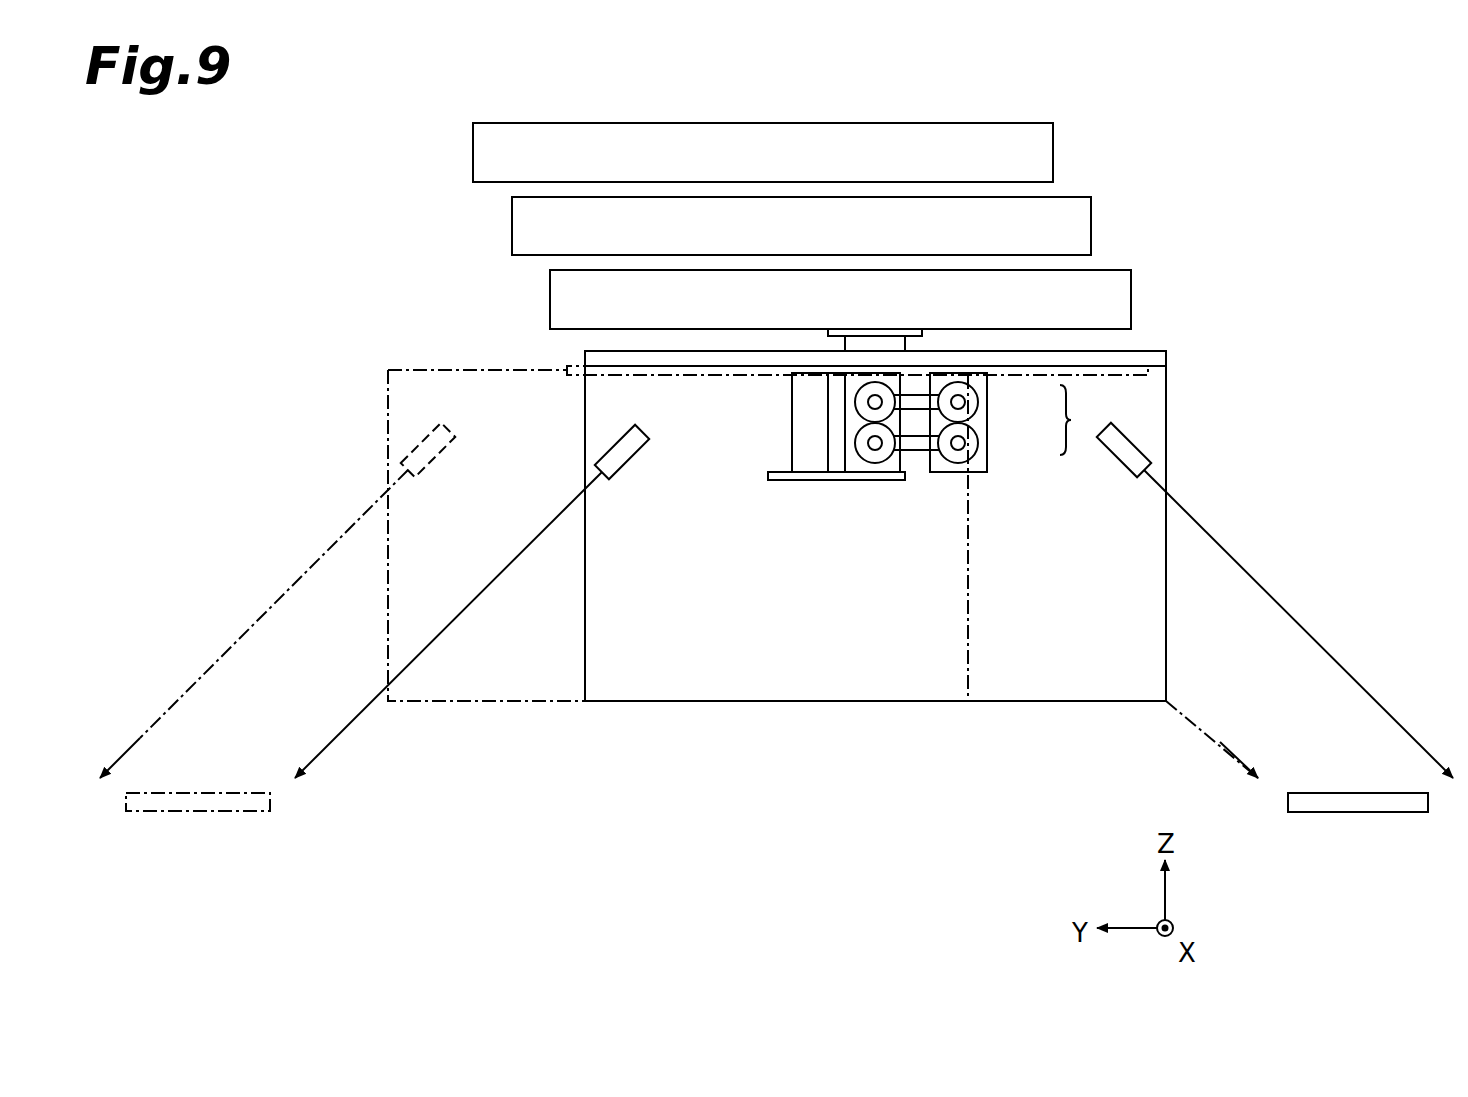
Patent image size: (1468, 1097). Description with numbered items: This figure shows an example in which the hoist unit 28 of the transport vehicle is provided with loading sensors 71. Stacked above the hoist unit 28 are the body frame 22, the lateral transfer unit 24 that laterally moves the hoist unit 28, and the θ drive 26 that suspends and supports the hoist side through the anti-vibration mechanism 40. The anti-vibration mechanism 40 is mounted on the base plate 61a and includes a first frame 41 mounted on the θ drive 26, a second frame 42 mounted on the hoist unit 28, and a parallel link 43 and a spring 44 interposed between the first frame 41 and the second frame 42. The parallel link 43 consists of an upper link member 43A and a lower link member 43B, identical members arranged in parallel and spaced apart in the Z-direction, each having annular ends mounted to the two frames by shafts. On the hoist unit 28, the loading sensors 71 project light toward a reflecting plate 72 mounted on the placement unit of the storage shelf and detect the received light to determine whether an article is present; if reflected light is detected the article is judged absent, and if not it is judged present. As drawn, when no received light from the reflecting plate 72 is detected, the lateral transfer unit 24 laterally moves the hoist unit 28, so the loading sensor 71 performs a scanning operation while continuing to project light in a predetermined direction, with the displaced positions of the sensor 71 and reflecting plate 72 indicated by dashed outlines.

The body frame 22 is at (1040, 148).
The lateral transfer unit 24 is at (1078, 221).
The θ drive 26 is at (1118, 294).
The hoist unit 28 is at (1170, 409).
The base plate 61a is at (1153, 358).
The anti-vibration mechanism 40 is at (743, 520).
The first frame 41 is at (882, 485).
The second frame 42 is at (995, 463).
The parallel link 43 is at (1085, 420).
The upper link member 43A is at (973, 400).
The lower link member 43B is at (973, 443).
The spring 44 is at (782, 428).
The loading sensor 71 is at (618, 438).
The reflecting plate 72 is at (225, 793).